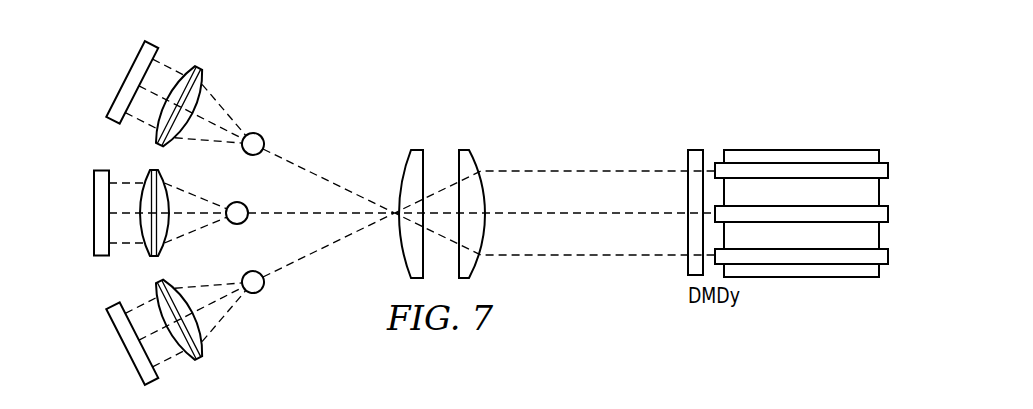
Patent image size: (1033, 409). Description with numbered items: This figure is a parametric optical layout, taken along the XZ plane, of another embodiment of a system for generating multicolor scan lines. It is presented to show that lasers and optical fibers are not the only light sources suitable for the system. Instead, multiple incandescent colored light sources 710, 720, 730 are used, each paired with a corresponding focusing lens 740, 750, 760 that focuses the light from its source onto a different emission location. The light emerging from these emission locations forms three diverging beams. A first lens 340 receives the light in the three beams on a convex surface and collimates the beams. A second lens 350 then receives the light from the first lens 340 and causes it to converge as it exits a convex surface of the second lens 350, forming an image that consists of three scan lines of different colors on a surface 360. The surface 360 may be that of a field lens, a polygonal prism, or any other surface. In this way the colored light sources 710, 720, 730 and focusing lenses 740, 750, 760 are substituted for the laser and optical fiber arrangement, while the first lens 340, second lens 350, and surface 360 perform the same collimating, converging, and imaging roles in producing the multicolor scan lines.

The colored light source 710 is at (130, 67).
The colored light source 720 is at (94, 205).
The colored light source 730 is at (128, 357).
The focusing lens 740 is at (203, 77).
The focusing lens 750 is at (162, 252).
The focusing lens 760 is at (203, 348).
The first lens 340 is at (403, 170).
The second lens 350 is at (470, 150).
The surface 360 is at (697, 148).